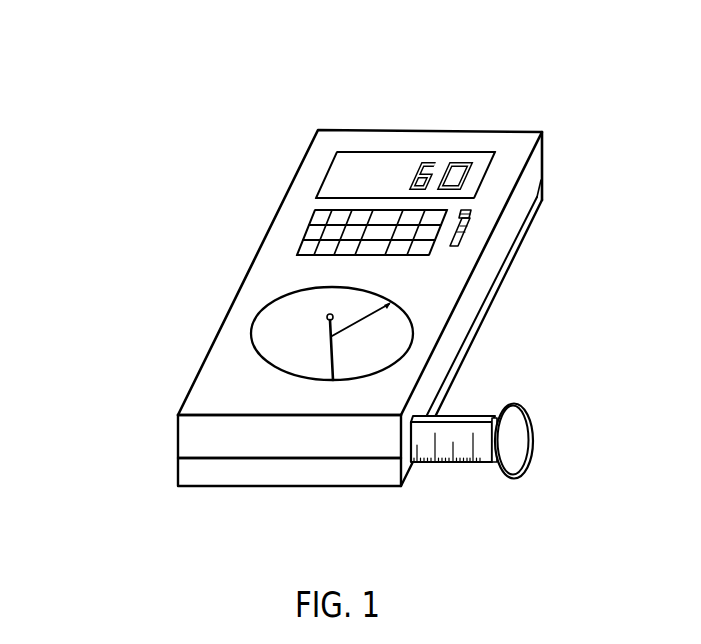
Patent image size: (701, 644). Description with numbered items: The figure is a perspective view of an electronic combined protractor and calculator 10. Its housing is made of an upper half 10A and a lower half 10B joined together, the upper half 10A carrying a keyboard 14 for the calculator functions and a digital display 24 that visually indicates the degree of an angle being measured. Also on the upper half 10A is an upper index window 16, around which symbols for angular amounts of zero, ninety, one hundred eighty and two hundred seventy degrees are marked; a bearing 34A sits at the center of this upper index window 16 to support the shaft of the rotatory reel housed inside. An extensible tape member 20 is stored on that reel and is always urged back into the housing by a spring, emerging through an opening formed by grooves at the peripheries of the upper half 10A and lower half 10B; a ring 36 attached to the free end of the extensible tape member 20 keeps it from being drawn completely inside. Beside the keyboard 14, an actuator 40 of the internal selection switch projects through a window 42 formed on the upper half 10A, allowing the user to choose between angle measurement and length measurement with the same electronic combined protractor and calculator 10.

The electronic combined protractor and calculator 10 is at (325, 105).
The upper half 10A is at (190, 438).
The lower half 10B is at (195, 470).
The keyboard 14 is at (313, 218).
The upper index window 16 is at (273, 348).
The extensible tape member 20 is at (460, 427).
The digital display 24 is at (402, 162).
The bearing 34A is at (303, 287).
The ring 36 is at (533, 423).
The actuator 40 is at (461, 233).
The window 42 is at (471, 213).